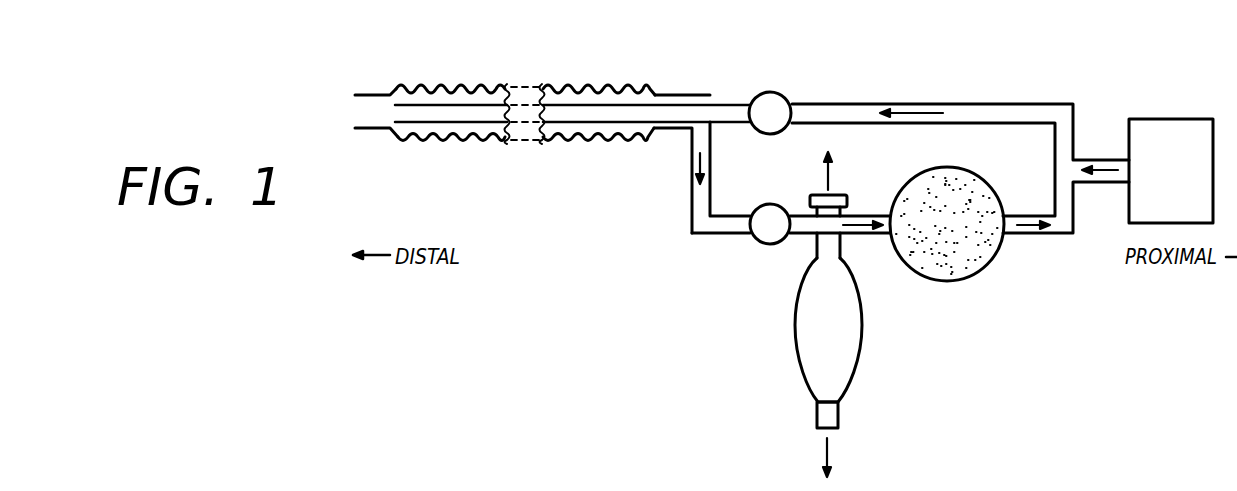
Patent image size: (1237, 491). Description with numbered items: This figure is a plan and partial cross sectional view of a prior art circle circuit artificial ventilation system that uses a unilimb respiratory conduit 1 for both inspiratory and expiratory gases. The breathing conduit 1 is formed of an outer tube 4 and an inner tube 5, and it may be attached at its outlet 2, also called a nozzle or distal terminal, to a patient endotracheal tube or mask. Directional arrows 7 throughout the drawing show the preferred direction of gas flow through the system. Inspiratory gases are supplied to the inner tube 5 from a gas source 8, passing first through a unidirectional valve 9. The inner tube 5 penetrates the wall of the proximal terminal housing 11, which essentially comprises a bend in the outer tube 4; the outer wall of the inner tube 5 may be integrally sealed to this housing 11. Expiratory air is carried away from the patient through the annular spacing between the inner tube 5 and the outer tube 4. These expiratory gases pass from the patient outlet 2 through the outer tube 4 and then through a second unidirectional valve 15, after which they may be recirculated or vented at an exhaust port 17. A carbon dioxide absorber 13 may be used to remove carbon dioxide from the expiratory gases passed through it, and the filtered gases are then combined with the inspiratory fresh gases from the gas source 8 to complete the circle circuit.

The unilimb respiratory conduit 1 is at (553, 145).
The outlet 2 is at (385, 95).
The outer tube 4 is at (470, 89).
The inner tube 5 is at (603, 104).
The directional arrows 7 is at (700, 166).
The gas source 8 is at (1168, 128).
The unidirectional valve 9 is at (785, 96).
The proximal terminal housing 11 is at (710, 104).
The carbon dioxide absorber 13 is at (926, 283).
The unidirectional valve 15 is at (755, 242).
The exhaust port 17 is at (812, 195).